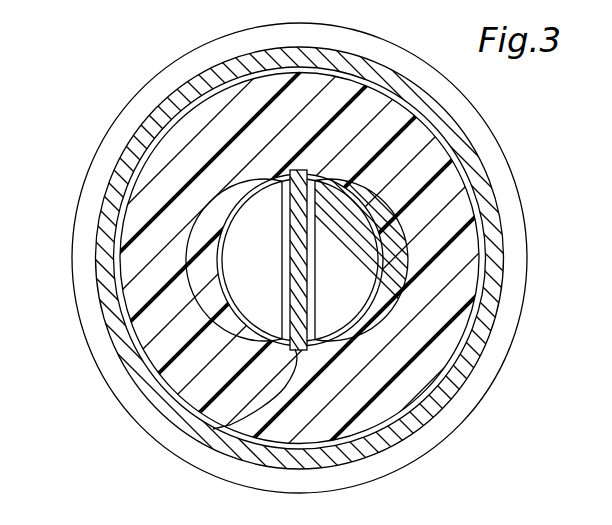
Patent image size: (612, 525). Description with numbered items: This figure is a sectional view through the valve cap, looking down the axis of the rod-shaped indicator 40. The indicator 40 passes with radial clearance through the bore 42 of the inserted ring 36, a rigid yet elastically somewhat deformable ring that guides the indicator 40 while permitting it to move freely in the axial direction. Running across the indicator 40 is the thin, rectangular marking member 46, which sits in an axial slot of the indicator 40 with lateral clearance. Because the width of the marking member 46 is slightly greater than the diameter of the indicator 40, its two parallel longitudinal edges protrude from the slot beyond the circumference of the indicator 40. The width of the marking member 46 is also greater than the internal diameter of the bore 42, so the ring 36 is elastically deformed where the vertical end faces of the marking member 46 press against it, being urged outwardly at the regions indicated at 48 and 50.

The ring 36 is at (455, 287).
The indicator 40 is at (352, 258).
The bore 42 is at (225, 273).
The marking member 46 is at (297, 316).
The outwardly urged region of the ring 48 is at (232, 425).
The outwardly urged region of the ring 50 is at (300, 170).